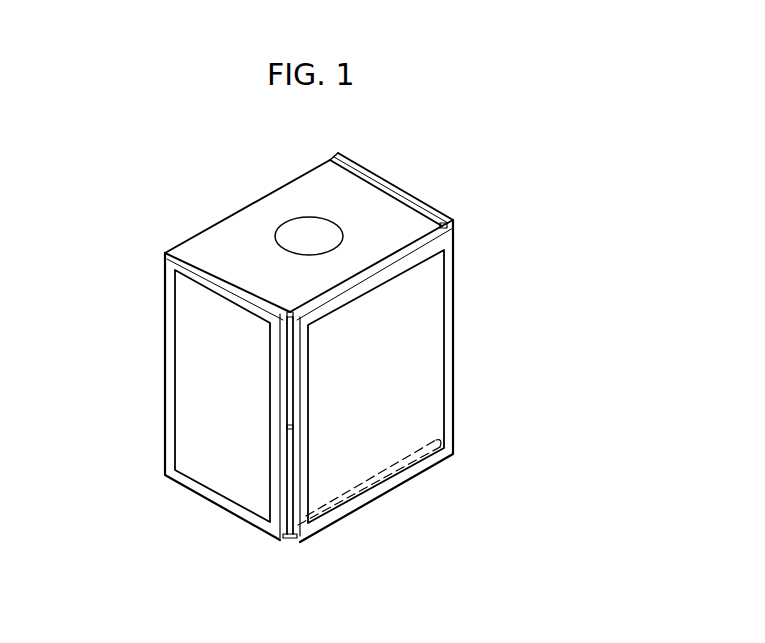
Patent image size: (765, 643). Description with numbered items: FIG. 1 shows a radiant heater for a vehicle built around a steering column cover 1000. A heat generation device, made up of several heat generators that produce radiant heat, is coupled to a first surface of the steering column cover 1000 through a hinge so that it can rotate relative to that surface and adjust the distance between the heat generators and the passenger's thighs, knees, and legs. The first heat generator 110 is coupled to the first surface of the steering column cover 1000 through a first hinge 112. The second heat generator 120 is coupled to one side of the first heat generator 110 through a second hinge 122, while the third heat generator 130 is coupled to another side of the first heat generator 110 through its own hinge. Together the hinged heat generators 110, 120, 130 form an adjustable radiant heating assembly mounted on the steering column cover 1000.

The steering column cover 1000 is at (308, 367).
The first heat generator 110 is at (410, 411).
The first hinge 112 is at (423, 455).
The second heat generator 120 is at (217, 473).
The second hinge 122 is at (292, 492).
The third heat generator 130 is at (404, 196).